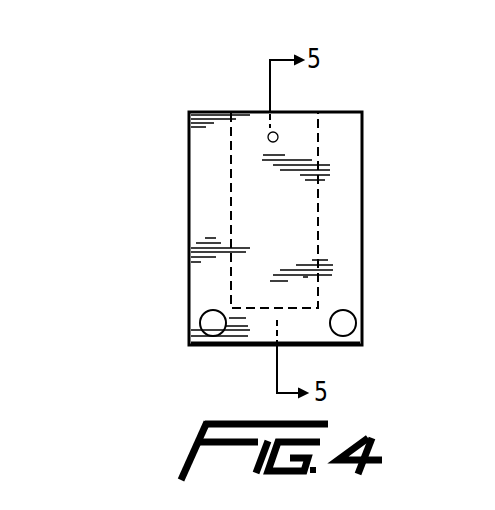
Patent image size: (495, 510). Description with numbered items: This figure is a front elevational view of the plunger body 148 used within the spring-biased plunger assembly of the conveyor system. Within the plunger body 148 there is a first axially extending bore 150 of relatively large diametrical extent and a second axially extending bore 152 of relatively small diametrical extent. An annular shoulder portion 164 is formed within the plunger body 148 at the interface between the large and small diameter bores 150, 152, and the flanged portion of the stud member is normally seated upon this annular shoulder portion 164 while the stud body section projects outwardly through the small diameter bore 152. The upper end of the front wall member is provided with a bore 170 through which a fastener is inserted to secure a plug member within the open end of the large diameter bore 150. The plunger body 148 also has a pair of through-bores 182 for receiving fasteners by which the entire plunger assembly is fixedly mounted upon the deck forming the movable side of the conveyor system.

The plunger body 148 is at (347, 212).
The first axially extending bore 150 is at (310, 173).
The second axially extending bore 152 is at (293, 327).
The annular shoulder portion 164 is at (317, 300).
The bore 170 is at (280, 128).
The through-bores 182 is at (212, 322).